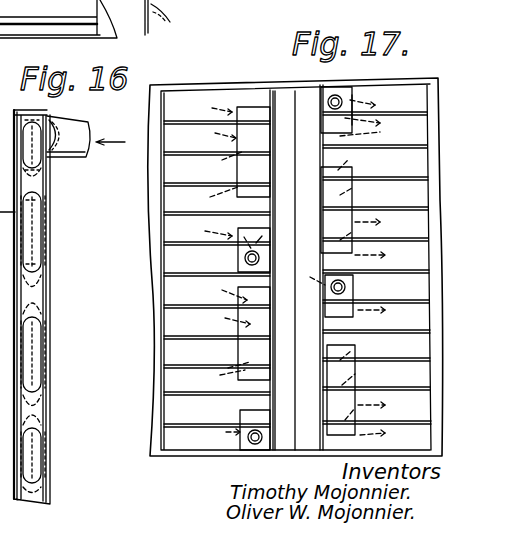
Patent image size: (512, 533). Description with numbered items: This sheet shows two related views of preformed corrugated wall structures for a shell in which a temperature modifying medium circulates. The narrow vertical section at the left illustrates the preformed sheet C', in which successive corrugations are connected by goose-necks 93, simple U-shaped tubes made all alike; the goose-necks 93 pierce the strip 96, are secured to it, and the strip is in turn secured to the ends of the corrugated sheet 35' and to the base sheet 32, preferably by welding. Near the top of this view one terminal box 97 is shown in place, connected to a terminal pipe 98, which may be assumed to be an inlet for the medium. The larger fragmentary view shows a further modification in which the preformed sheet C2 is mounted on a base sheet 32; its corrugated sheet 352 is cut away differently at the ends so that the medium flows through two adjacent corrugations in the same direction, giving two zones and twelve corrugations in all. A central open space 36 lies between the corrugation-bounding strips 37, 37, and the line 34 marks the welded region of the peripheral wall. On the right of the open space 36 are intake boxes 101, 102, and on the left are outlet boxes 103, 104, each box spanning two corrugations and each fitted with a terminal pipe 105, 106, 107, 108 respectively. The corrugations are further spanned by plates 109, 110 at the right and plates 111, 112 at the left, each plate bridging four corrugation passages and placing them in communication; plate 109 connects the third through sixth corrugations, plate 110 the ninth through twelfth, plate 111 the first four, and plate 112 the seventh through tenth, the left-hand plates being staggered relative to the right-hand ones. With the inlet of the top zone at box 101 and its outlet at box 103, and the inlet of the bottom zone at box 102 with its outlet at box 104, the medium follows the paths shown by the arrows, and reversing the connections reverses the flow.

In FIG. 17, the base sheet 32 is at (318, 88).
In FIG. 17, the weld line 34 is at (296, 332).
In FIG. 16, the corrugated sheet 35' is at (61, 232).
In FIG. 17, the corrugated sheet 352 is at (422, 258).
In FIG. 17, the open space 36 is at (294, 207).
In FIG. 17, the corrugations bounding strips 37 is at (275, 285).
In FIG. 16, the goose-neck 93 is at (42, 232).
In FIG. 16, the strip 96 is at (44, 289).
In FIG. 16, the terminal box 97 is at (48, 119).
In FIG. 16, the terminal pipe 98 is at (110, 127).
In FIG. 16, the preformed sheet C' is at (50, 164).
In FIG. 17, the preformed sheet C2 is at (420, 227).
In FIG. 17, the intake box 101 is at (347, 94).
In FIG. 17, the intake box 102 is at (356, 265).
In FIG. 17, the outlet box 103 is at (262, 236).
In FIG. 17, the outlet box 104 is at (240, 413).
In FIG. 17, the terminal pipe 105 is at (353, 103).
In FIG. 17, the terminal pipe 106 is at (360, 291).
In FIG. 17, the terminal pipe 107 is at (247, 258).
In FIG. 17, the terminal pipe 108 is at (248, 437).
In FIG. 17, the plate 109 is at (355, 176).
In FIG. 17, the plate 110 is at (356, 355).
In FIG. 17, the plate 111 is at (237, 164).
In FIG. 17, the plate 112 is at (238, 347).